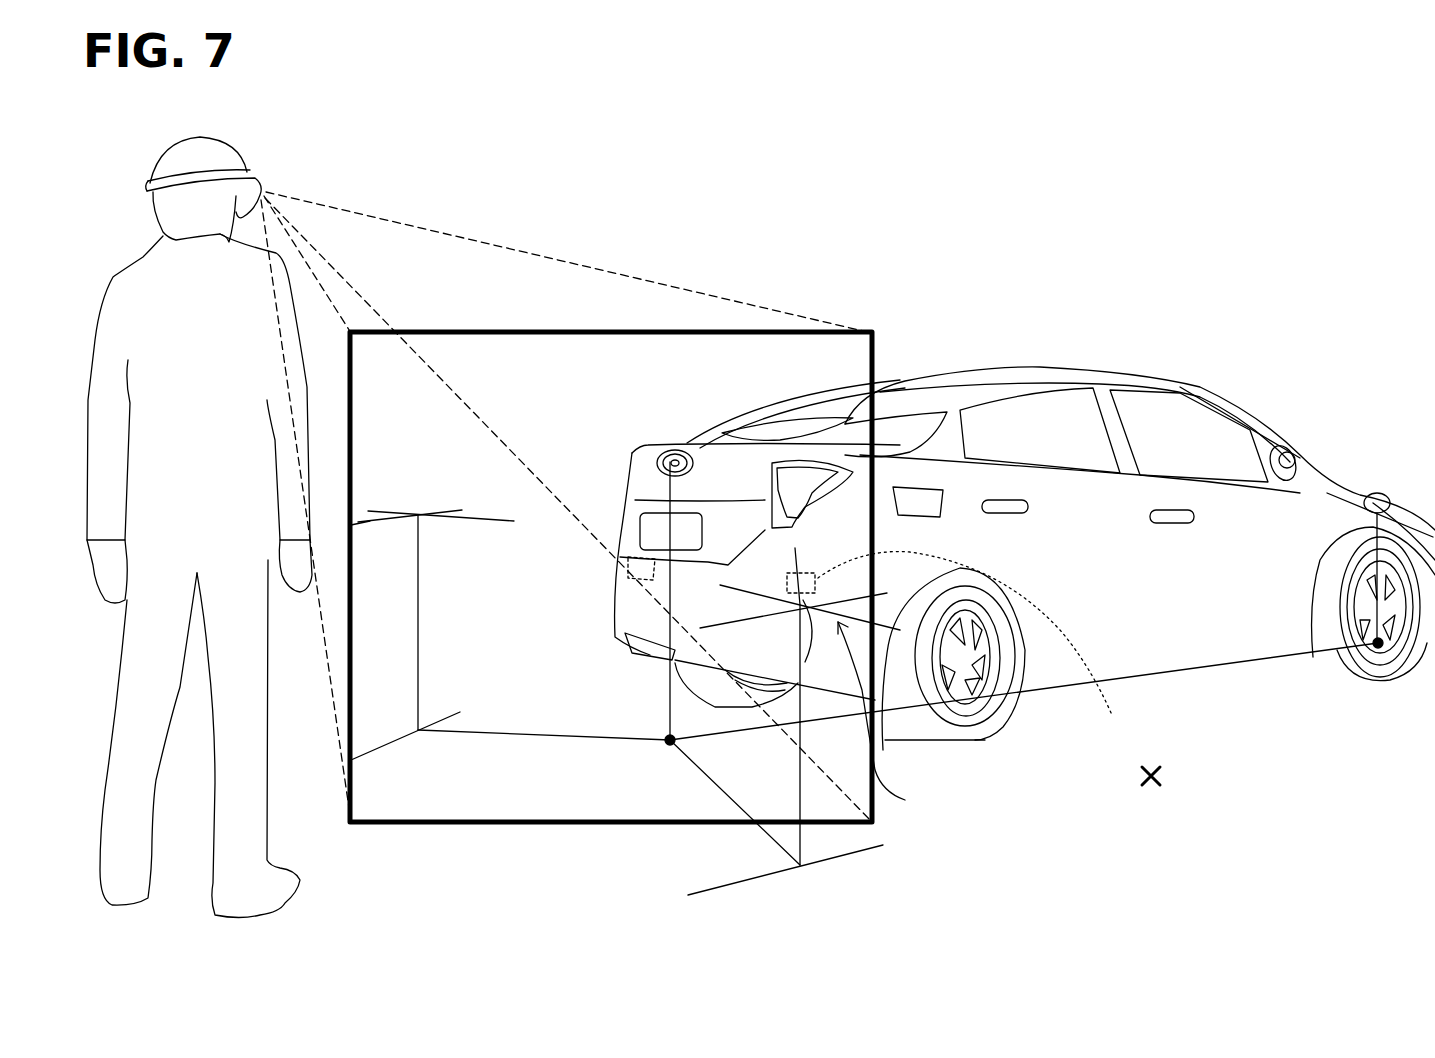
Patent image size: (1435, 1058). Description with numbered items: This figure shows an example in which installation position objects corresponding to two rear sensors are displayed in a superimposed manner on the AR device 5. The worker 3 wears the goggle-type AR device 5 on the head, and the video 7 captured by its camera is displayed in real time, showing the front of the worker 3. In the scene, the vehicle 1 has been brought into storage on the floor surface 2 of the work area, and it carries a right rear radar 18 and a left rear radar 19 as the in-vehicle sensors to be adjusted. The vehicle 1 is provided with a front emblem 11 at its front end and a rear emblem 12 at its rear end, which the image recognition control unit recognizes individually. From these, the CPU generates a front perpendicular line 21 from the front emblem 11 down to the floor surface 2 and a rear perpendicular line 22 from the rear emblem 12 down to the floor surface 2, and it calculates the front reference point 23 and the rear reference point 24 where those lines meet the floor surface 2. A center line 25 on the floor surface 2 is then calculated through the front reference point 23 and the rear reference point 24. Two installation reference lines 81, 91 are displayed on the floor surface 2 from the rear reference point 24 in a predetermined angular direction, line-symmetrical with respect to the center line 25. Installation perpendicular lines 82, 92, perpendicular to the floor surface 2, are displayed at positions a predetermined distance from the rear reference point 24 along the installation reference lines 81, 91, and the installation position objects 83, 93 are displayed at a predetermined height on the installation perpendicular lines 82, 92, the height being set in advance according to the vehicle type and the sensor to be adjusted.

The vehicle 1 is at (1082, 368).
The floor surface 2 is at (1165, 782).
The worker 3 is at (152, 256).
The AR device 5 is at (250, 175).
The video 7 is at (538, 330).
The front emblem 11 is at (1372, 493).
The rear emblem 12 is at (675, 452).
The right rear radar 18 is at (914, 649).
The left rear radar 19 is at (612, 555).
The front perpendicular line 21 is at (1305, 658).
The rear perpendicular line 22 is at (668, 700).
The front reference point 23 is at (1378, 680).
The rear reference point 24 is at (666, 750).
The center line 25 is at (708, 738).
The installation reference line 81 is at (772, 840).
The installation perpendicular line 82 is at (800, 790).
The installation position object 83 is at (890, 788).
The installation reference line 91 is at (510, 742).
The installation perpendicular line 92 is at (418, 646).
The installation position object 93 is at (446, 508).